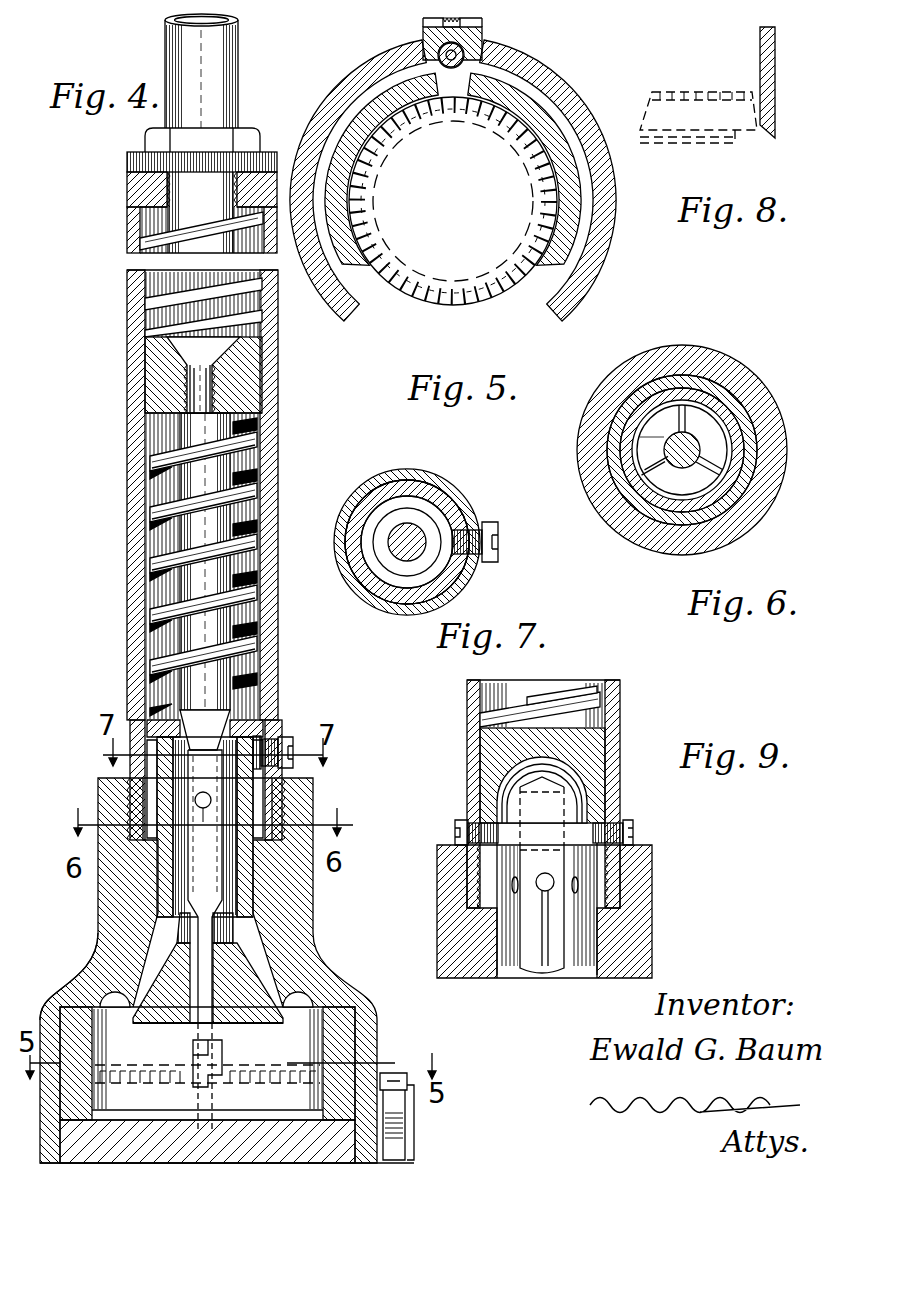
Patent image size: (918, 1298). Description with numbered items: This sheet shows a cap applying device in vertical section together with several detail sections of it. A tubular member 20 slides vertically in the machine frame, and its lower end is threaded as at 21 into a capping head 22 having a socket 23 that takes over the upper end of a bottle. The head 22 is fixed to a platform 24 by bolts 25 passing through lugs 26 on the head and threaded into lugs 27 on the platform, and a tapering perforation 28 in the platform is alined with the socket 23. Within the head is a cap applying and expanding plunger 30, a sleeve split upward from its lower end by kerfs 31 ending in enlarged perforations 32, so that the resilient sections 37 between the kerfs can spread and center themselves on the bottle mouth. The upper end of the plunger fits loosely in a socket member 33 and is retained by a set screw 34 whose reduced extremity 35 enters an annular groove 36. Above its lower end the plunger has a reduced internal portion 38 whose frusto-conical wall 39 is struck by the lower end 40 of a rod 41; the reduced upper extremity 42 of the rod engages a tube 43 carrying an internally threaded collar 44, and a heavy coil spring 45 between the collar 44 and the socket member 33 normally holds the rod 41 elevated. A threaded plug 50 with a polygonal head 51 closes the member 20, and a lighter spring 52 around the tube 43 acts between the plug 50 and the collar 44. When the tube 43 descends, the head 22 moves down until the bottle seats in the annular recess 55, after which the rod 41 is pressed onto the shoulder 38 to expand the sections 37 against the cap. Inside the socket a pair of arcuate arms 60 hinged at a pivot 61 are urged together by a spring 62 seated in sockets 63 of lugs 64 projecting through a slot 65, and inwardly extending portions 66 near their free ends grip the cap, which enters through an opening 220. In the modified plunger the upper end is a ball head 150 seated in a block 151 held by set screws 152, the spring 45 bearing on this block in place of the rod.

In FIG. 4, the tubular member 20 is at (280, 437).
In FIG. 7, the tubular member 20 is at (370, 600).
In FIG. 6, the tubular member 20 is at (698, 368).
In FIG. 9, the tubular member 20 is at (620, 688).
In FIG. 4, the threaded connection 21 is at (288, 808).
In FIG. 6, the threaded connection 21 is at (640, 437).
In FIG. 4, the capping head 22 is at (338, 973).
In FIG. 5, the capping head 22 is at (598, 263).
In FIG. 6, the capping head 22 is at (640, 357).
In FIG. 9, the capping head 22 is at (452, 980).
In FIG. 4, the socket 23 is at (345, 1027).
In FIG. 4, the platform 24 is at (382, 1163).
In FIG. 4, the bolt 25 is at (408, 1078).
In FIG. 4, the head lug 26 is at (415, 1110).
In FIG. 4, the platform lug 27 is at (405, 1139).
In FIG. 4, the tapering perforation 28 is at (85, 1152).
In FIG. 4, the cap applying and expanding plunger 30 is at (250, 930).
In FIG. 7, the cap applying and expanding plunger 30 is at (407, 522).
In FIG. 6, the cap applying and expanding plunger 30 is at (665, 437).
In FIG. 4, the kerf 31 is at (213, 975).
In FIG. 6, the kerf 31 is at (748, 412).
In FIG. 9, the kerf 31 is at (548, 963).
In FIG. 4, the enlarged perforation 32 is at (208, 795).
In FIG. 9, the enlarged perforation 32 is at (554, 881).
In FIG. 4, the socket member 33 is at (150, 720).
In FIG. 7, the socket member 33 is at (348, 566).
In FIG. 6, the socket member 33 is at (733, 377).
In FIG. 4, the set screw 34 is at (292, 742).
In FIG. 7, the set screw 34 is at (498, 541).
In FIG. 4, the reduced extremity 35 is at (278, 728).
In FIG. 7, the reduced extremity 35 is at (458, 534).
In FIG. 4, the annular groove 36 is at (156, 768).
In FIG. 7, the annular groove 36 is at (432, 506).
In FIG. 4, the plunger sections 37 is at (152, 1025).
In FIG. 4, the reduced internal portion 38 is at (180, 951).
In FIG. 4, the frusto-conical wall 39 is at (185, 925).
In FIG. 4, the lower end of rod 40 is at (160, 880).
In FIG. 7, the lower end of rod 40 is at (448, 537).
In FIG. 6, the lower end of rod 40 is at (716, 478).
In FIG. 4, the rod 41 is at (141, 233).
In FIG. 4, the reduced upper extremity 42 is at (195, 396).
In FIG. 4, the tube 43 is at (184, 375).
In FIG. 4, the internally threaded collar 44 is at (253, 371).
In FIG. 4, the heavy coil spring 45 is at (268, 489).
In FIG. 9, the heavy coil spring 45 is at (563, 697).
In FIG. 4, the threaded plug 50 is at (145, 191).
In FIG. 4, the polygonal head 51 is at (250, 137).
In FIG. 4, the spring 52 is at (145, 300).
In FIG. 4, the annular recess 55 is at (68, 984).
In FIG. 4, the arcuate arm 60 is at (330, 1049).
In FIG. 5, the arcuate arm 60 is at (348, 279).
In FIG. 8, the arcuate arm 60 is at (760, 66).
In FIG. 5, the pivot 61 is at (490, 57).
In FIG. 5, the spring 62 is at (458, 20).
In FIG. 5, the socket 63 is at (430, 22).
In FIG. 5, the lug 64 is at (423, 35).
In FIG. 5, the slot 65 is at (438, 57).
In FIG. 5, the inwardly extending portion 66 is at (366, 234).
In FIG. 8, the inwardly extending portion 66 is at (760, 125).
In FIG. 9, the ball head 150 is at (470, 783).
In FIG. 9, the block 151 is at (598, 745).
In FIG. 9, the set screw 152 is at (455, 821).
In FIG. 5, the opening 220 is at (430, 318).